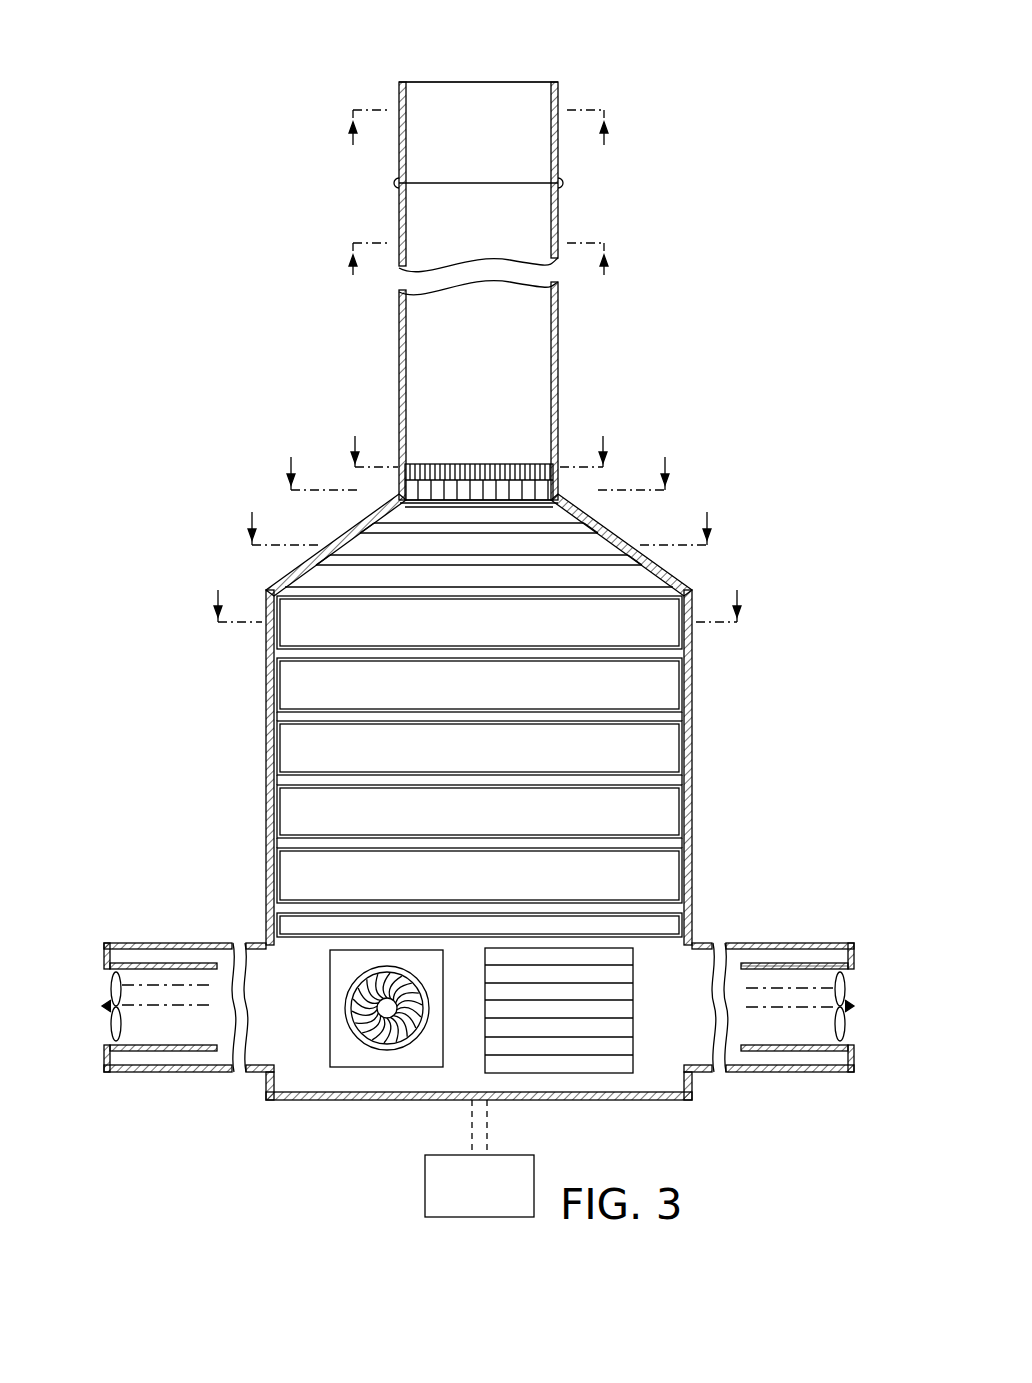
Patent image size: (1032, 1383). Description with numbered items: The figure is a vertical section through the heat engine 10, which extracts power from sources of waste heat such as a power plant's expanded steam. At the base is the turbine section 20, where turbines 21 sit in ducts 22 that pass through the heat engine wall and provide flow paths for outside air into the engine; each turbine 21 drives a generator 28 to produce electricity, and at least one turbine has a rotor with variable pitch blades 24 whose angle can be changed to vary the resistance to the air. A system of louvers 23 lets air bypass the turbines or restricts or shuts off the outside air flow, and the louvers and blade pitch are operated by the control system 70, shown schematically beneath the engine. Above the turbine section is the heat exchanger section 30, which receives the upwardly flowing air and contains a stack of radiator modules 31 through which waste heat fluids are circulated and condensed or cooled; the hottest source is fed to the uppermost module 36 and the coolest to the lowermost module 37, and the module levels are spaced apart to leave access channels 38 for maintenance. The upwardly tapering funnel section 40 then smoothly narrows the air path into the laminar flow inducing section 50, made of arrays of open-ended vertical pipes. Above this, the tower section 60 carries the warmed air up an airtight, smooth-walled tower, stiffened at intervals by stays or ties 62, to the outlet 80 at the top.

The heat engine 10 is at (682, 292).
The turbine section 20 is at (757, 1100).
The turbine 21 is at (102, 1022).
The duct 22 is at (168, 1052).
The louvers 23 is at (592, 1068).
The variable pitch blades 24 is at (387, 1040).
The generator 28 is at (806, 993).
The heat exchanger section 30 is at (710, 864).
The radiator module 31 is at (670, 690).
The uppermost module 36 is at (392, 514).
The lowermost module 37 is at (288, 925).
The access channel 38 is at (288, 718).
The funnel section 40 is at (626, 526).
The laminar flow inducing section 50 is at (578, 488).
The tower section 60 is at (572, 340).
The stays or ties 62 is at (521, 183).
The control system 70 is at (425, 1186).
The outlet 80 is at (444, 72).